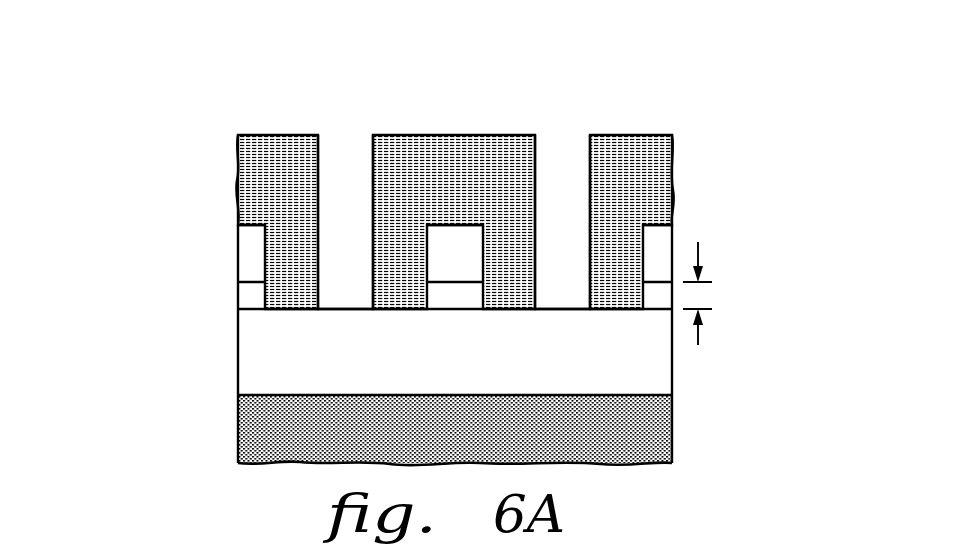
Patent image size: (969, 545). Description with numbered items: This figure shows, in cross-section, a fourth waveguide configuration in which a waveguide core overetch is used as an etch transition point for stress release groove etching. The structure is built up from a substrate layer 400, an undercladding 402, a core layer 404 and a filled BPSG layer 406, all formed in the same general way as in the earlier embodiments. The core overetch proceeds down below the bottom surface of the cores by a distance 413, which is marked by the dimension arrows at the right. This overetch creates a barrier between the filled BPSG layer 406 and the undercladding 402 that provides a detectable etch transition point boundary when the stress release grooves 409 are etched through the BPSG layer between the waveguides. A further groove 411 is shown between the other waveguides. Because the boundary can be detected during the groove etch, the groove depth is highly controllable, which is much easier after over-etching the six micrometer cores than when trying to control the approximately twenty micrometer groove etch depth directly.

The substrate layer 400 is at (237, 437).
The undercladding 402 is at (237, 323).
The core layer 404 is at (237, 260).
The filled BPSG layer 406 is at (237, 187).
The stress release groove 409 is at (343, 128).
The opening between features 411 is at (552, 307).
The overetch distance 413 is at (707, 292).